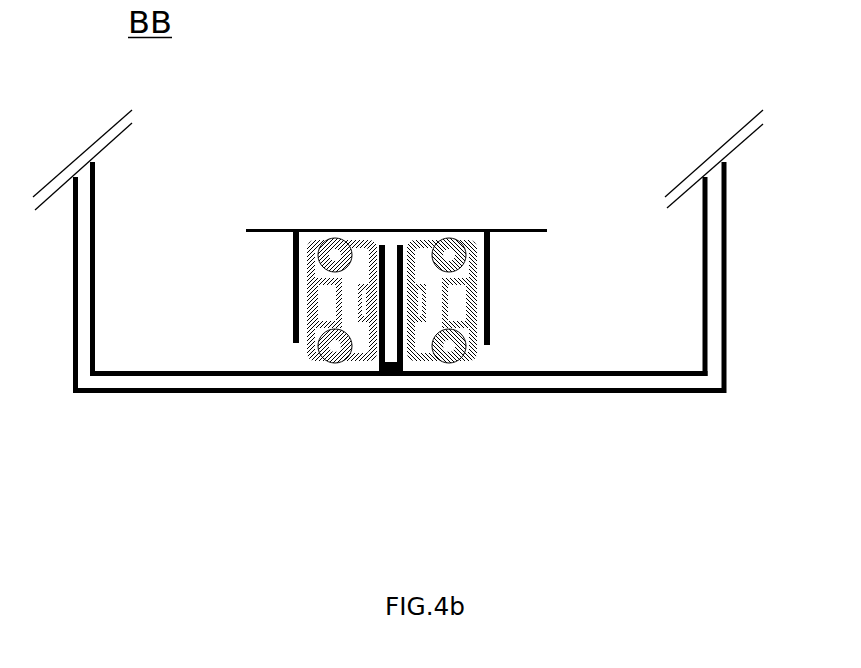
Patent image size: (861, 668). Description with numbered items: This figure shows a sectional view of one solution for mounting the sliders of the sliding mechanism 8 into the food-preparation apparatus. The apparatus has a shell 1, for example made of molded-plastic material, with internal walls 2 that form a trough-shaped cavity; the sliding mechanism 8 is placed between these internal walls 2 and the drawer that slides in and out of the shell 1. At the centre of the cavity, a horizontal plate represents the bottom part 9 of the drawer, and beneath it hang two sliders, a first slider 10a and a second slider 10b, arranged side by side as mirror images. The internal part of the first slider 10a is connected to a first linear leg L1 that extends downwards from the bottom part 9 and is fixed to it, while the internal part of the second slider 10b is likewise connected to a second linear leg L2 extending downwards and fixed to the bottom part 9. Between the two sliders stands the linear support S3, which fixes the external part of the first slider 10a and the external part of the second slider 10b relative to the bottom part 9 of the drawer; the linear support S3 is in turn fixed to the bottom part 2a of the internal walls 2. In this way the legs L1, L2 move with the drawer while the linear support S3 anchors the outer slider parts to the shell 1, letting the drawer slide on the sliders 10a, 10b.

The shell 1 is at (725, 325).
The internal walls 2 is at (95, 183).
The bottom part of the internal walls 2a is at (127, 373).
The sliding mechanism 8 is at (411, 204).
The bottom part of drawer 9 is at (525, 230).
The linear support S3 is at (384, 247).
The first linear leg L1 is at (295, 255).
The second linear leg L2 is at (490, 263).
The first slider 10a is at (353, 357).
The second slider 10b is at (425, 357).